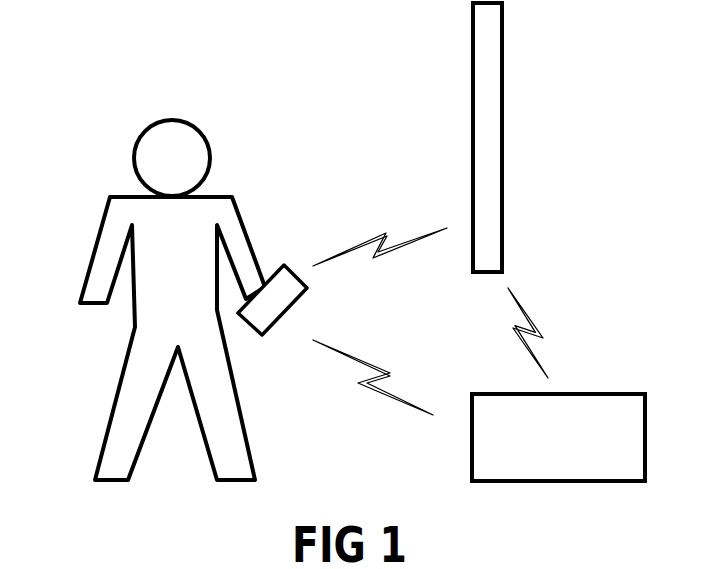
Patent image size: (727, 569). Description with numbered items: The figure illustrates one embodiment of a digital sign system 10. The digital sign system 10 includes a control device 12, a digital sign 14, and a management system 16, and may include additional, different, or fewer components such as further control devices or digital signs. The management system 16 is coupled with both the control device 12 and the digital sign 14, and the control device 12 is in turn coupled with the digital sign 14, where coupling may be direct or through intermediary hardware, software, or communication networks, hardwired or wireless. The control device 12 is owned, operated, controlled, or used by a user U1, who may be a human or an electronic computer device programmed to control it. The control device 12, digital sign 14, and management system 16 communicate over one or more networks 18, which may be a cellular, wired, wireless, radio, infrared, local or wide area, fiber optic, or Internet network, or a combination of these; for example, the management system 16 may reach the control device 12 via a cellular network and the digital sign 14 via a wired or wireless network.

The digital sign system 10 is at (192, 55).
The user U1 is at (71, 248).
The control device 12 is at (369, 330).
The digital sign 14 is at (518, 197).
The management system 16 is at (575, 450).
The network 18 is at (357, 229).